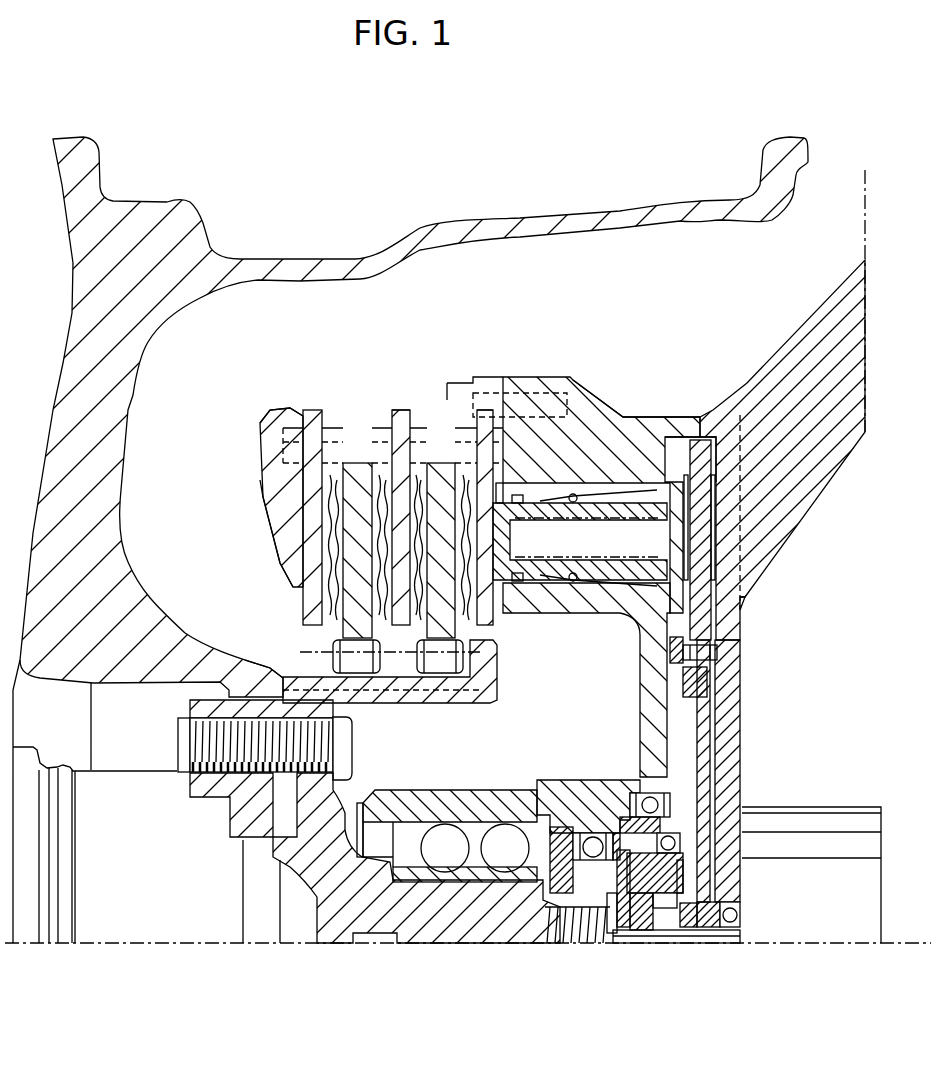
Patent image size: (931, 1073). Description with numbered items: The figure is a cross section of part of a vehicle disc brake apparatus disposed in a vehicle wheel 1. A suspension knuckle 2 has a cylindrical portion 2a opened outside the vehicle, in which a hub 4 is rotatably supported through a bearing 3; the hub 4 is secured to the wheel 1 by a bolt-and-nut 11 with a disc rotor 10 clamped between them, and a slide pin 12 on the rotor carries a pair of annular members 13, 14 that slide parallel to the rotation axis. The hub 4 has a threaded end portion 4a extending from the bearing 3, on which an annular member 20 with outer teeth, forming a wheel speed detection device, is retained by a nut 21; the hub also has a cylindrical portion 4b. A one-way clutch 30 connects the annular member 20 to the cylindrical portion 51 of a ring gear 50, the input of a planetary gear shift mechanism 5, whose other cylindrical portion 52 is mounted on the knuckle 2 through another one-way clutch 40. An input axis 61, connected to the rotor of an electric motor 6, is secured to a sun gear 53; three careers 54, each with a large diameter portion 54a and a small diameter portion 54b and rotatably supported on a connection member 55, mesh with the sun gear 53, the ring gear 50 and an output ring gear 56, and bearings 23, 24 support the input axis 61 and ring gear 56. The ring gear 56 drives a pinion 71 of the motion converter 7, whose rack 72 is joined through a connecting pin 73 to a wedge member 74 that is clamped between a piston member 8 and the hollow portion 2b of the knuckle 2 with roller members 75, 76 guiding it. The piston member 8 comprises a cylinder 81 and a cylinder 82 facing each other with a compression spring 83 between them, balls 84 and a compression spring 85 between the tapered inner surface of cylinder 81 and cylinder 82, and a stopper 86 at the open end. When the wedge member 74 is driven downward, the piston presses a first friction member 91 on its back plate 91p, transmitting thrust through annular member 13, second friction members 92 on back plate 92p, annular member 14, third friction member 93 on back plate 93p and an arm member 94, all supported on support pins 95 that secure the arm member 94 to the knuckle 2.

The vehicle wheel 1 is at (173, 250).
The knuckle 2 is at (800, 500).
The cylindrical portion 2a is at (508, 800).
The hollow portion 2b is at (740, 597).
The bearing 3 is at (460, 826).
The hub 4 is at (360, 897).
The end portion 4a is at (555, 920).
The cylindrical portion 4b is at (458, 937).
The planetary gear shift mechanism 5 is at (655, 948).
The electric motor 6 is at (810, 915).
The motion converter 7 is at (684, 450).
The piston member 8 is at (593, 477).
The disc rotor 10 is at (278, 666).
The bolt-and-nut 11 is at (353, 738).
The slide pin 12 is at (312, 657).
The annular member 13 is at (440, 477).
The annular member 14 is at (388, 478).
The annular member 20 is at (551, 820).
The nut 21 is at (575, 917).
The bearing 23 is at (713, 917).
The bearing 24 is at (680, 837).
The one-way clutch 30 is at (547, 930).
The one-way clutch 40 is at (662, 790).
The ring gear 50 is at (620, 825).
The cylindrical portion 51 is at (605, 865).
The cylindrical portion 52 is at (678, 817).
The sun gear 53 is at (632, 933).
The career 54 is at (660, 907).
The large diameter portion 54a is at (650, 910).
The small diameter portion 54b is at (667, 903).
The connection member 55 is at (623, 928).
The ring gear 56 is at (708, 850).
The input axis 61 is at (697, 937).
The pinion 71 is at (713, 907).
The rack 72 is at (728, 700).
The connecting pin 73 is at (735, 640).
The wedge member 74 is at (702, 467).
The roller member 75 is at (627, 407).
The roller member 76 is at (718, 478).
The cylinder 81 is at (610, 560).
The cylinder 82 is at (500, 570).
The compression spring 83 is at (607, 588).
The balls 84 is at (573, 588).
The compression spring 85 is at (553, 588).
The stopper 86 is at (543, 588).
The first friction member 91 is at (445, 440).
The first back plate 91p is at (489, 410).
The second friction member 92 is at (357, 473).
The second back plate 92p is at (402, 408).
The third friction member 93 is at (262, 487).
The third back plate 93p is at (307, 408).
The arm member 94 is at (272, 507).
The support pins 95 is at (256, 408).